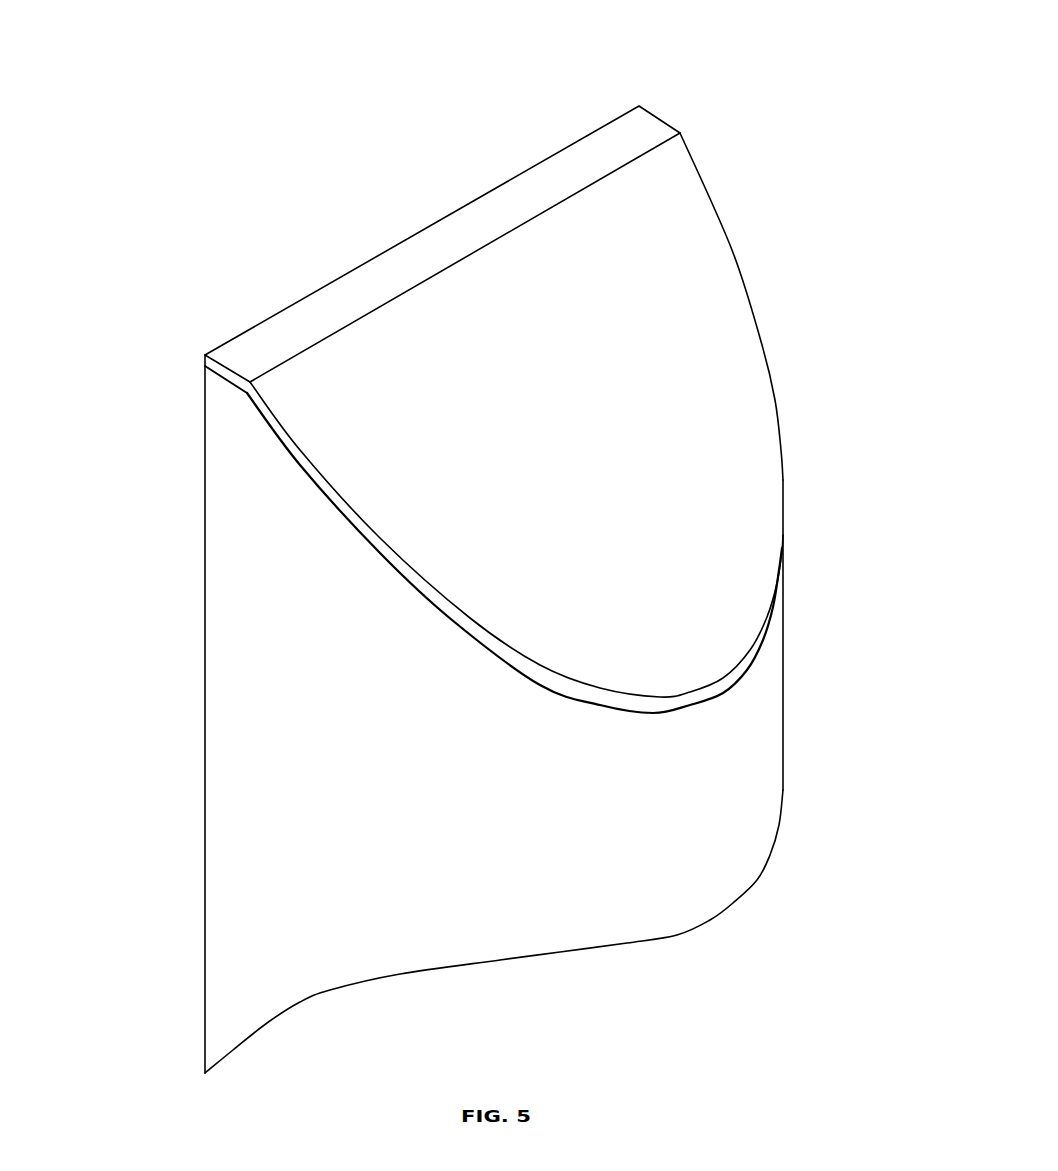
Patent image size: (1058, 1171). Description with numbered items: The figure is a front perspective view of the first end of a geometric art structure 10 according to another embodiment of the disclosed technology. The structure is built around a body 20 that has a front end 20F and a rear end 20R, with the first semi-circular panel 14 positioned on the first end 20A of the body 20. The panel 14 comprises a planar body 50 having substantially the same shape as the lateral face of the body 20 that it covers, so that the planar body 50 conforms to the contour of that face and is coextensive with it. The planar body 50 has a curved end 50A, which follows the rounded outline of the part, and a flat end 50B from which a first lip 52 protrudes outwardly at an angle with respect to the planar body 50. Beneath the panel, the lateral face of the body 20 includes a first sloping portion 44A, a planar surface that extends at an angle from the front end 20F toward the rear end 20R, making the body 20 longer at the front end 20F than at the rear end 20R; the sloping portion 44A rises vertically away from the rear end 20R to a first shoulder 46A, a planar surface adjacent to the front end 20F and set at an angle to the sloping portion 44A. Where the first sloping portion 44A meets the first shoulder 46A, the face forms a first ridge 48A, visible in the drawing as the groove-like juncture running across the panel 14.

The seat assembly 10 is at (238, 119).
The first semi-circular panel 14 is at (745, 290).
The body 20 is at (757, 810).
The first end 20A is at (272, 240).
The front end 20F is at (150, 690).
The rear end 20R is at (841, 744).
The first sloping portion 44A is at (348, 525).
The first shoulder 46A is at (220, 376).
The first ridge 48A is at (247, 390).
The planar body 50 is at (683, 415).
The curved end 50A is at (735, 670).
The flat end 50B is at (530, 222).
The first lip 52 is at (430, 243).